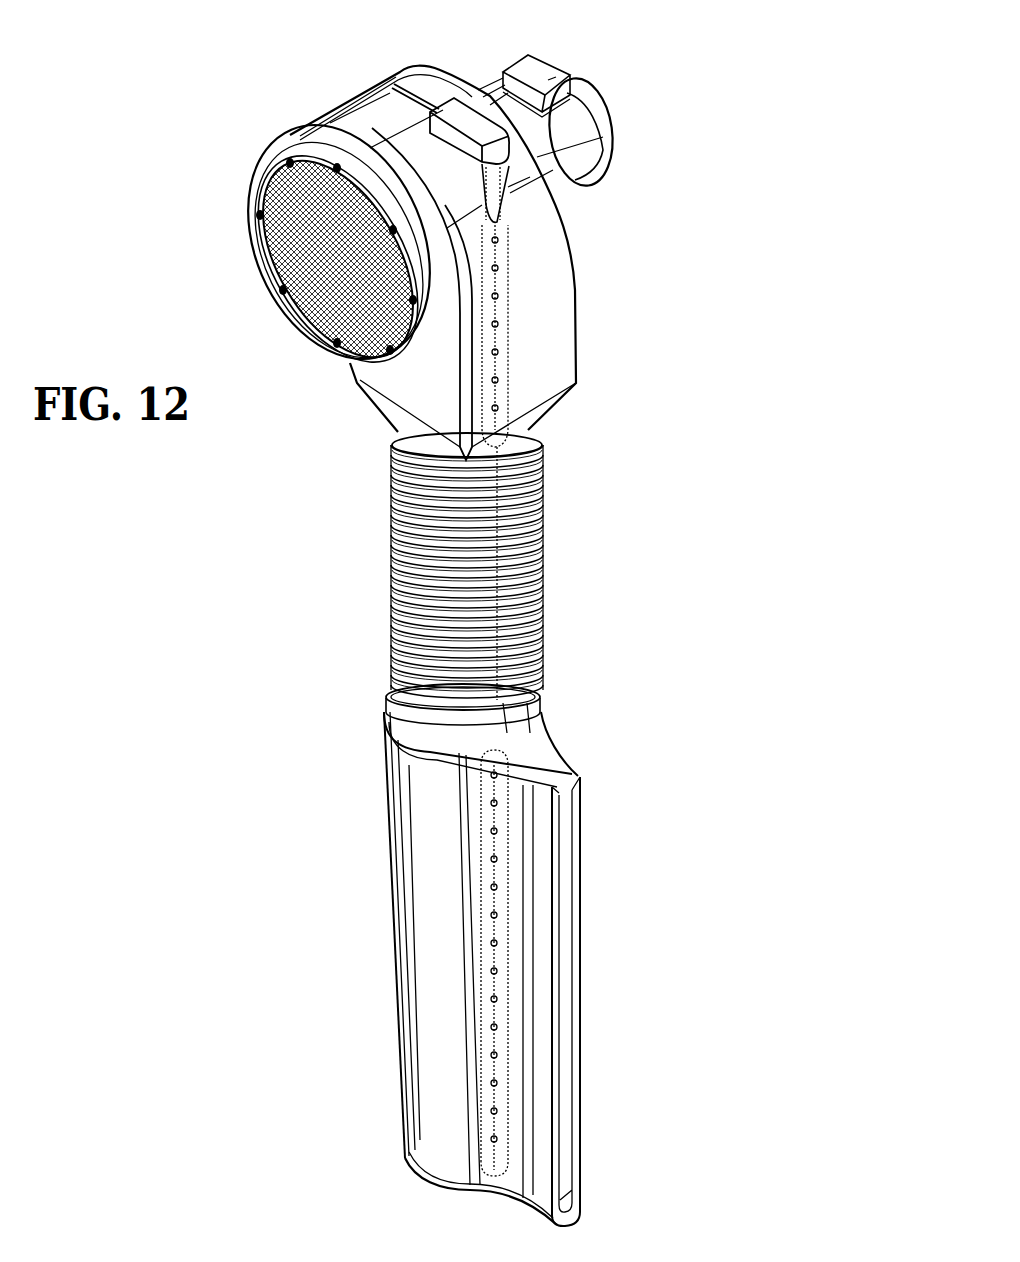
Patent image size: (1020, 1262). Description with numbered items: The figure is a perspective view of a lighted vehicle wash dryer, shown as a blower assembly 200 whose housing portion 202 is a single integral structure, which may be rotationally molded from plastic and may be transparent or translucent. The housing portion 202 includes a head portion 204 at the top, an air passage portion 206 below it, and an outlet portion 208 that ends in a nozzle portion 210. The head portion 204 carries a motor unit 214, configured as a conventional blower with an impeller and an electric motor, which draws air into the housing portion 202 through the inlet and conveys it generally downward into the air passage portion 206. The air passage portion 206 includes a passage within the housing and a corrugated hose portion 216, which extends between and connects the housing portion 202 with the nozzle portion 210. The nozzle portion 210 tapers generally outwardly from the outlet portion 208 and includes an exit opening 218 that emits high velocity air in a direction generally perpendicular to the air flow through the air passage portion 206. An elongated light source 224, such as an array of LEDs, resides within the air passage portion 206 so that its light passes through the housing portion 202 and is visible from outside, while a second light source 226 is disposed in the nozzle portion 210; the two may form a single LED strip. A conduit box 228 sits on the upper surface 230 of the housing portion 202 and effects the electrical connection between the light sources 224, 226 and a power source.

The blower assembly 200 is at (465, 617).
The housing portion 202 is at (422, 72).
The head portion 204 is at (331, 116).
The air passage portion 206 is at (531, 545).
The outlet portion 208 is at (505, 951).
The nozzle portion 210 is at (401, 1107).
The motor unit 214 is at (563, 125).
The hose portion 216 is at (540, 553).
The exit opening 218 is at (566, 1000).
The light source 224 is at (510, 275).
The light source 226 is at (494, 930).
The conduit box 228 is at (463, 118).
The upper surface 230 is at (393, 133).